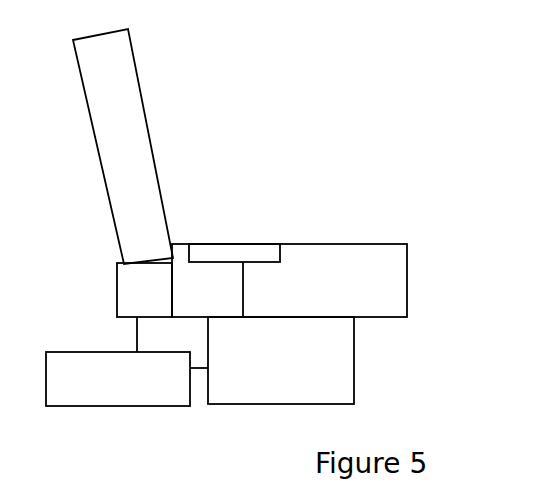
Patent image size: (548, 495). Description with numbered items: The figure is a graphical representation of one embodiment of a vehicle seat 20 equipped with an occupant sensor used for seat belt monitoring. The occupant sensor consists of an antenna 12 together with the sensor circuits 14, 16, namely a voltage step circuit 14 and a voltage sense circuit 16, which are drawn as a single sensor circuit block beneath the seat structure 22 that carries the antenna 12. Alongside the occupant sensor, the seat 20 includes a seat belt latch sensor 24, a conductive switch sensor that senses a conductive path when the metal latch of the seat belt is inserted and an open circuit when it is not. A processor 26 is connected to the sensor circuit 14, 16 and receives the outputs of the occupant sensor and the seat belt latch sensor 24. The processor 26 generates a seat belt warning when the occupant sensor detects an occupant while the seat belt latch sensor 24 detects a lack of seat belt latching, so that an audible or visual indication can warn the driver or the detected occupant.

The antenna 12 is at (246, 231).
The voltage step circuit 14 is at (366, 360).
The voltage sense circuit 16 is at (366, 350).
The seat 20 is at (164, 78).
The housing 22 is at (323, 233).
The seat belt latch sensor 24 is at (113, 290).
The processor 26 is at (117, 418).